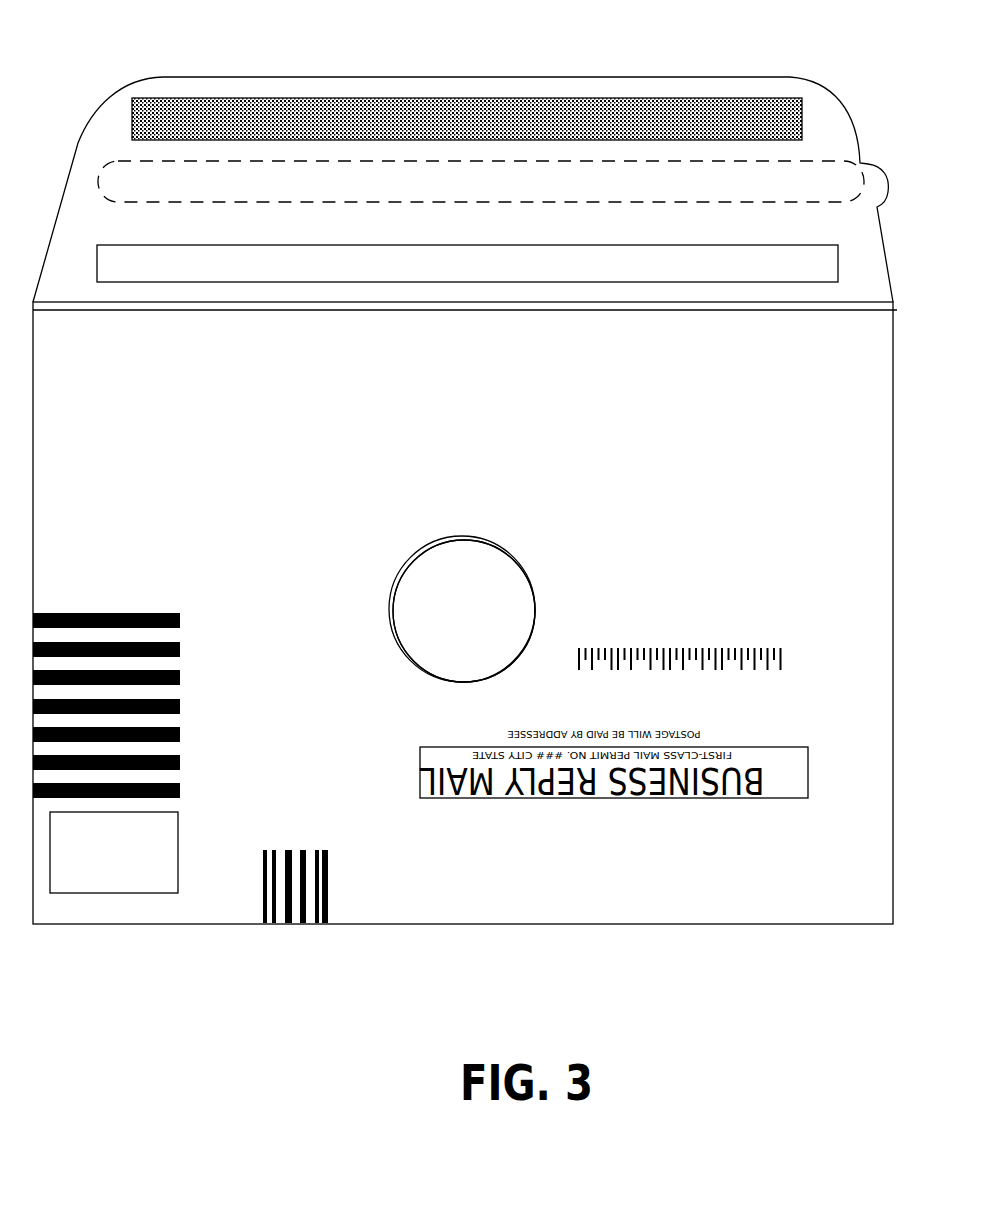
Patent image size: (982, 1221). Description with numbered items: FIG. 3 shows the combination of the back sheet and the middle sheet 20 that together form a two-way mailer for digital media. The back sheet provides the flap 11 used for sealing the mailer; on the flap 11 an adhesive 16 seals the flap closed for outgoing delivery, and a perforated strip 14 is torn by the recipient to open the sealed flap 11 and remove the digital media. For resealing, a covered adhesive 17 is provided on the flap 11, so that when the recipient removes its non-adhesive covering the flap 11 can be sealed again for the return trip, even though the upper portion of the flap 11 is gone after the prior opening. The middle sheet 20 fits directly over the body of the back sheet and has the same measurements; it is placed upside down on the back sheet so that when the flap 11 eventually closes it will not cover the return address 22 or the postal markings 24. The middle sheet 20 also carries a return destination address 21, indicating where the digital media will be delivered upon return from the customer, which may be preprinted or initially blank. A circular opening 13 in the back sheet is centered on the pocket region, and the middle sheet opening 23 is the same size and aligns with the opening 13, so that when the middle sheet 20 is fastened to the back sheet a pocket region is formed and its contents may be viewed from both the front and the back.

The flap 11 is at (108, 122).
The circular opening 13 is at (417, 620).
The perforated strip 14 is at (803, 181).
The adhesive 16 is at (355, 112).
The covered adhesive 17 is at (178, 256).
The middle sheet 20 is at (483, 893).
The return destination address 21 is at (788, 573).
The return address 22 is at (660, 828).
The middle sheet opening 23 is at (464, 611).
The postal markings 24 is at (128, 893).